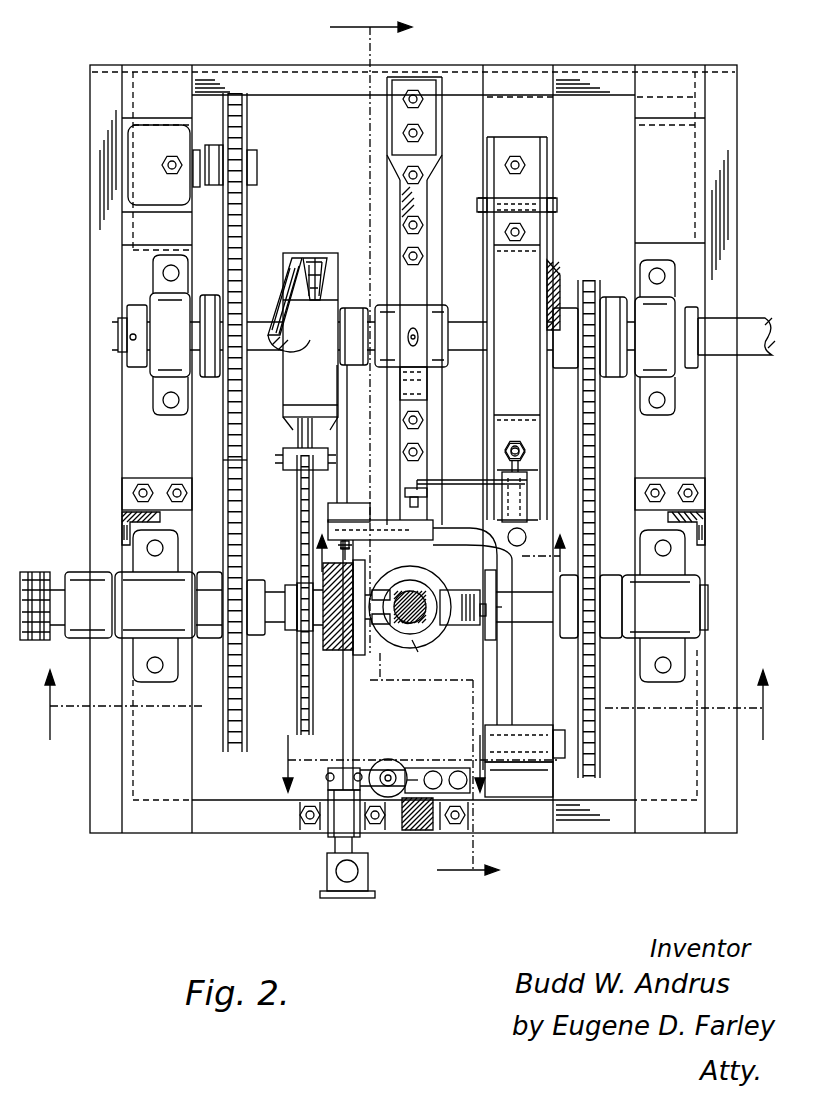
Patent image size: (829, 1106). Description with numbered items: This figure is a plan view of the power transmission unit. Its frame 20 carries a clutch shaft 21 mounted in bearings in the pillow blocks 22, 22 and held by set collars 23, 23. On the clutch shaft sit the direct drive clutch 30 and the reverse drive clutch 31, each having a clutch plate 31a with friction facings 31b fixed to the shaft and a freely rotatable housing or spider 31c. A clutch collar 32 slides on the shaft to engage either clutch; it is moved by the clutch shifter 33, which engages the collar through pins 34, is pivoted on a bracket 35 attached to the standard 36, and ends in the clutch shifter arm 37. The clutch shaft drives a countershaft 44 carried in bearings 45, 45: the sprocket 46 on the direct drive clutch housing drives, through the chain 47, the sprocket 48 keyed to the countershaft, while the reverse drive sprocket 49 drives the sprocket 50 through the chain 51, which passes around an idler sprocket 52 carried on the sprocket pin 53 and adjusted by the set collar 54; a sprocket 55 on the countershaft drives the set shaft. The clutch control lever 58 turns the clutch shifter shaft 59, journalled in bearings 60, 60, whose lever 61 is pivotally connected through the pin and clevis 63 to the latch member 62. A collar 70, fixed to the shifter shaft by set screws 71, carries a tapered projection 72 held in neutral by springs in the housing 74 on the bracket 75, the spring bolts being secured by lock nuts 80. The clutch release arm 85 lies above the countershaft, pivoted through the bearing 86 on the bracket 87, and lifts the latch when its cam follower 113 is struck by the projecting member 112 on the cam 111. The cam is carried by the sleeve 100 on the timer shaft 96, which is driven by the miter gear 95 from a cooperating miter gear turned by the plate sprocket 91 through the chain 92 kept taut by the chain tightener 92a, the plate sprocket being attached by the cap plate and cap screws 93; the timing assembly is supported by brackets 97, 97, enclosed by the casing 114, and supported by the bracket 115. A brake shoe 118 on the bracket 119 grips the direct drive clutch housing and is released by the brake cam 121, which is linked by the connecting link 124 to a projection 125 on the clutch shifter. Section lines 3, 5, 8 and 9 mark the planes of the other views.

The frame 20 is at (272, 70).
The clutch shaft 21 is at (112, 330).
The pillow block 22 is at (155, 300).
The set collar 23 is at (125, 365).
The direct drive clutch 30 is at (555, 290).
The reverse drive clutch 31 is at (273, 300).
The clutch plate 31a is at (296, 255).
The friction facings 31b is at (312, 256).
The housing (spider) 31c is at (336, 262).
The clutch collar 32 is at (445, 362).
The clutch shifter 33 is at (422, 395).
The pins 34 is at (420, 330).
The bracket 35 is at (430, 178).
The standard 36 is at (440, 140).
The clutch shifter arm 37 is at (400, 478).
The counter shaft 44 is at (65, 575).
The bearings 45 is at (185, 638).
The sprocket 46 is at (610, 297).
The chain 47 is at (597, 430).
The sprocket 48 is at (610, 575).
The reverse drive sprocket 49 is at (212, 380).
The sprocket 50 is at (258, 636).
The chain 51 is at (247, 450).
The idler sprocket 52 is at (247, 110).
The sprocket pin 53 is at (257, 170).
The set collar 54 is at (197, 152).
The sprocket 55 is at (30, 570).
The clutch control lever 58 is at (320, 893).
The clutch shifter shaft 59 is at (353, 722).
The bearings 60 is at (350, 308).
The lever 61 is at (330, 529).
The latch member 62 is at (382, 520).
The pin (and clevis) 63 is at (350, 550).
The collar 70 is at (328, 785).
The set screws 71 is at (326, 777).
The tapered projection 72 is at (365, 775).
The housing 74 is at (386, 760).
The bracket 75 is at (420, 768).
The lock nuts 80 is at (390, 760).
The clutch release arm 85 is at (512, 680).
The bearing 86 is at (528, 727).
The bracket 87 is at (548, 782).
The plate sprocket 91 is at (290, 585).
The chain 92 is at (297, 722).
The chain tightener 92a is at (290, 470).
The cap plate and cap screws 93 is at (297, 590).
The miter gear 95 is at (416, 650).
The timer shaft 96 is at (427, 585).
The supporting brackets 97 is at (122, 515).
The sleeve 100 is at (415, 625).
The cam 111 is at (466, 625).
The projecting member 112 is at (485, 630).
The cam follower 113 is at (487, 585).
The housing or casing 114 is at (405, 630).
The supporting bracket 115 is at (336, 652).
The brake shoes 118 is at (543, 262).
The bracket 119 is at (547, 163).
The cam 121 is at (528, 480).
The connecting link 124 is at (478, 480).
The projection 125 is at (428, 494).
The section line 3 is at (447, 553).
The section line 5 is at (409, 705).
The section line 8 is at (414, 450).
The section line 9 is at (415, 763).